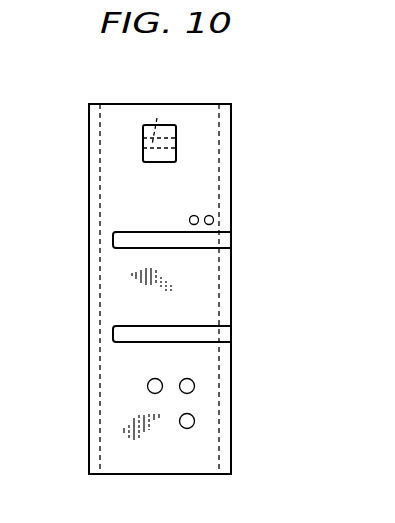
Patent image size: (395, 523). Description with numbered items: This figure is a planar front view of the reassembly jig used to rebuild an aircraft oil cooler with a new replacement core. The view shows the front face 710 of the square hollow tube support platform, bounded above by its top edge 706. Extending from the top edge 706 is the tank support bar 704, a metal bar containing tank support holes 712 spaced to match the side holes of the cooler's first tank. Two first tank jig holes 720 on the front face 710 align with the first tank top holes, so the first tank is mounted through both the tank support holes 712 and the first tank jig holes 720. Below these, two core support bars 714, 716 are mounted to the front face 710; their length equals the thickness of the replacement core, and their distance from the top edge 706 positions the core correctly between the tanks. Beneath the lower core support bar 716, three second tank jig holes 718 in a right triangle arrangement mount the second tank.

The tank support bar 704 is at (139, 131).
The top edge 706 is at (120, 104).
The front face 710 is at (206, 118).
The tank support holes 712 is at (157, 118).
The core support bar 714 is at (223, 238).
The core support bar 716 is at (223, 333).
The second tank jig holes 718 is at (162, 381).
The first tank jig holes 720 is at (197, 216).